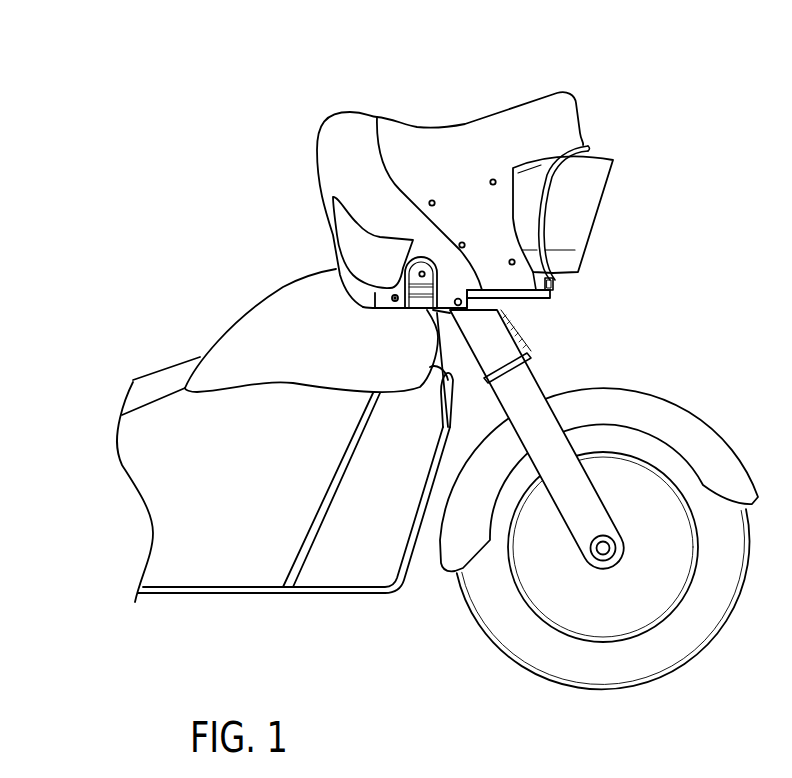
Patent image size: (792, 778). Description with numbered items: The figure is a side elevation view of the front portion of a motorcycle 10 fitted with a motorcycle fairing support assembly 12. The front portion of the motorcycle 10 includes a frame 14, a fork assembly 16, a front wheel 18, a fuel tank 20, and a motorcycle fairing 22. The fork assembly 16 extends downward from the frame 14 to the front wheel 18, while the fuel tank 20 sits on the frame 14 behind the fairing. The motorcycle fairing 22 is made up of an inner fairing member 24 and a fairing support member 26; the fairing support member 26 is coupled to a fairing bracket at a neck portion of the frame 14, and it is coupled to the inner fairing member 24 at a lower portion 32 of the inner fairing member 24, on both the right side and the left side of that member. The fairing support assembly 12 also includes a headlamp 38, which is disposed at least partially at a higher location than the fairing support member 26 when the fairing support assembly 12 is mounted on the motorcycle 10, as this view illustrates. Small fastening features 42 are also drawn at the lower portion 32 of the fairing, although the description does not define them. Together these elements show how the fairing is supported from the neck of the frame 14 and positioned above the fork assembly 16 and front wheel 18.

The motorcycle 10 is at (185, 229).
The motorcycle fairing support assembly 12 is at (477, 173).
The frame 14 is at (470, 413).
The fork assembly 16 is at (532, 354).
The front wheel 18 is at (648, 522).
The fuel tank 20 is at (225, 357).
The motorcycle fairing 22 is at (603, 140).
The inner fairing member 24 is at (508, 136).
The fairing support member 26 is at (556, 293).
The lower portion 32 is at (576, 282).
The headlamp 38 is at (588, 195).
The fastener bracket 42 is at (420, 271).